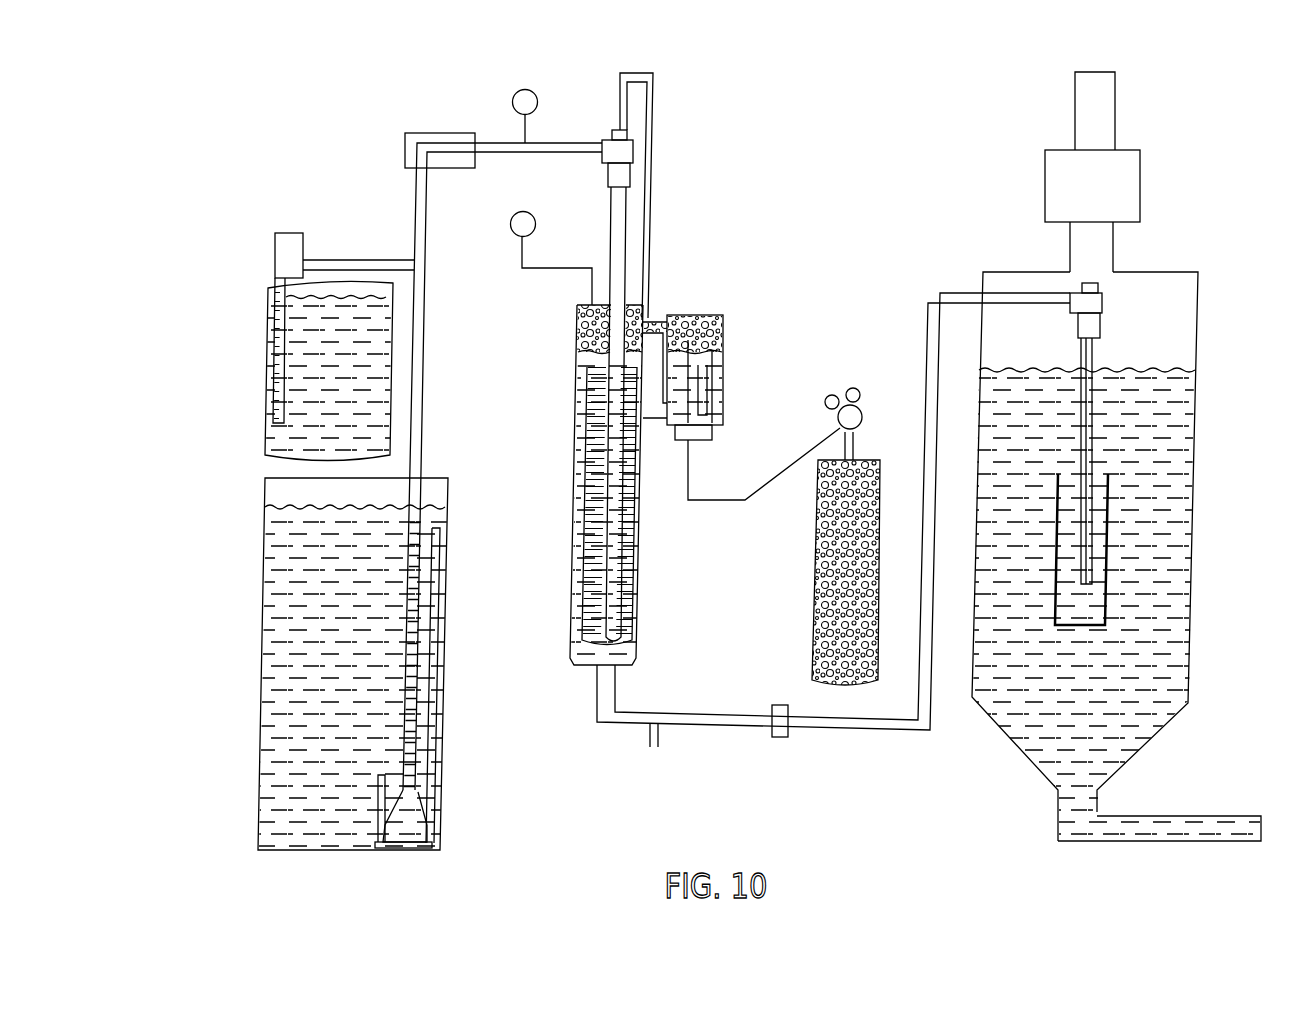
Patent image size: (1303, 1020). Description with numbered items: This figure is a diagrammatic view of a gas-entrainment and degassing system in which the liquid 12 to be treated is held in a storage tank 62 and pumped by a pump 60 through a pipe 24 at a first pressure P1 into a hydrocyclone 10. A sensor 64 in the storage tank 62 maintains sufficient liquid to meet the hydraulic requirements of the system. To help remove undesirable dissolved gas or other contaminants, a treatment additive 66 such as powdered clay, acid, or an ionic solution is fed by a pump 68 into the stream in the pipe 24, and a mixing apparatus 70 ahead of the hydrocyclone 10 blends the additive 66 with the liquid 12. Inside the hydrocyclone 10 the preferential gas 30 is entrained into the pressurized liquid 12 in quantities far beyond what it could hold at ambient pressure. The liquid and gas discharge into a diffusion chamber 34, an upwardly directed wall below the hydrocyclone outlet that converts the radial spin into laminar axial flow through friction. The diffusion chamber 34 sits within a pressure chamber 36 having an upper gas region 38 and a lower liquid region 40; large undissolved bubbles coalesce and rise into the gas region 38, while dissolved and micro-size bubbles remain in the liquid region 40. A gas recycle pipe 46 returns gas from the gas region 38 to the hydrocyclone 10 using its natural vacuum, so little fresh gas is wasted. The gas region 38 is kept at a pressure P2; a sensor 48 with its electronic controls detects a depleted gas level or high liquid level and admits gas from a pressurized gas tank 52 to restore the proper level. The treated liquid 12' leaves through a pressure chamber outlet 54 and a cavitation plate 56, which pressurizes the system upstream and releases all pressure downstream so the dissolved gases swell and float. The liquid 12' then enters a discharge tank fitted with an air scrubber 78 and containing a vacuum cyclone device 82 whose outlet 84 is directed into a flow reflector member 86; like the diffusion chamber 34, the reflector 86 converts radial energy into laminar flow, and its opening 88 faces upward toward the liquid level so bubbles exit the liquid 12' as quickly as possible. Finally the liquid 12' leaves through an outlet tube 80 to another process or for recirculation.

The hydrocyclone 10 is at (590, 221).
The liquid 12 is at (295, 670).
The liquid 12' is at (1131, 558).
The pipe 24 is at (420, 417).
The preferential gas 30 is at (690, 316).
The diffusion chamber 34 is at (587, 607).
The pressure chamber 36 is at (578, 488).
The upper gas region 38 is at (585, 328).
The lower liquid region 40 is at (585, 542).
The gas recycle pipe 46 is at (651, 167).
The sensor 48 is at (703, 430).
The pressurized gas tank 52 is at (827, 568).
The pressure chamber outlet 54 is at (633, 725).
The cavitation plate 56 is at (785, 737).
The pump 60 is at (398, 823).
The storage tank 62 is at (263, 625).
The sensor 64 is at (432, 715).
The treatment additive 66 is at (278, 333).
The pump 68 is at (280, 230).
The mixing apparatus 70 is at (418, 133).
The air scrubber 78 is at (1127, 188).
The outlet tube 80 is at (1138, 843).
The vacuum cyclone device 82 is at (1092, 350).
The outlet 84 is at (1085, 584).
The flow reflector member 86 is at (1110, 546).
The opening 88 is at (1100, 496).
The first pressure P1 is at (520, 93).
The gas pressure P2 is at (515, 230).